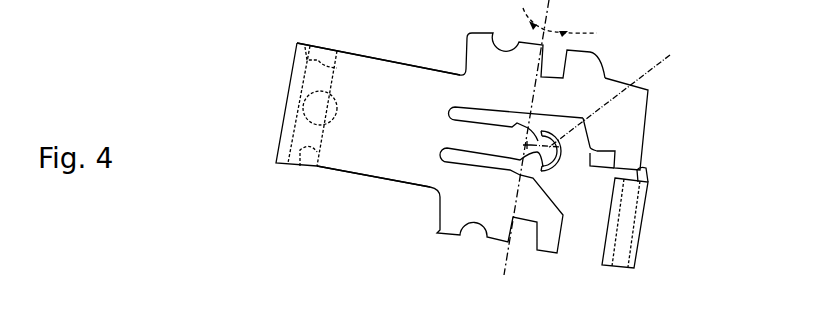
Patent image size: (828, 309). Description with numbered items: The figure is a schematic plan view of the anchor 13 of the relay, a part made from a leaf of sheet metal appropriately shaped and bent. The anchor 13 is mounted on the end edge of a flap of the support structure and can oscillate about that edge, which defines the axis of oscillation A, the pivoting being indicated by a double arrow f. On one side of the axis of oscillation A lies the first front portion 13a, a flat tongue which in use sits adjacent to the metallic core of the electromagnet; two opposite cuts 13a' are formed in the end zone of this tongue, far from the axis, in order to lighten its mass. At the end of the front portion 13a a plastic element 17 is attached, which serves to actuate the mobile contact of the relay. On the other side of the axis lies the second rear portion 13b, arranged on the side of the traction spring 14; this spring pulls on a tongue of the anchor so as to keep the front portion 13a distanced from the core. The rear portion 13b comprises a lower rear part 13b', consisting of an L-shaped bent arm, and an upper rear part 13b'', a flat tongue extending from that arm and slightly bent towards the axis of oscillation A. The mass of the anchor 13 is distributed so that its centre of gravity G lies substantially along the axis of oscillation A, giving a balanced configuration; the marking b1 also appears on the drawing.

The anchor 13 is at (473, 142).
The first front portion 13a is at (440, 143).
The cuts 13a' is at (378, 116).
The second rear portion 13b is at (615, 124).
The lower rear part 13b' is at (685, 171).
The upper rear part 13b'' is at (652, 223).
The traction spring 14 is at (563, 178).
The plastic element 17 is at (278, 168).
The axis of oscillation A is at (550, 137).
The double arrow f is at (581, 37).
The centre of gravity G is at (617, 97).
The width b1 is at (194, 10).